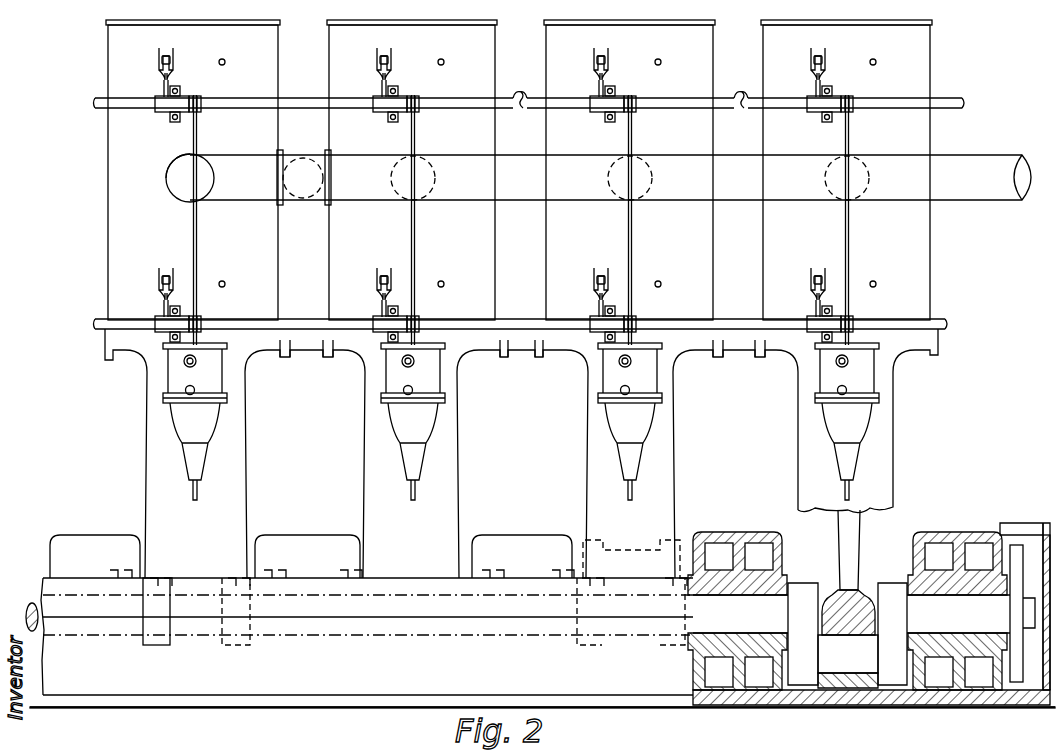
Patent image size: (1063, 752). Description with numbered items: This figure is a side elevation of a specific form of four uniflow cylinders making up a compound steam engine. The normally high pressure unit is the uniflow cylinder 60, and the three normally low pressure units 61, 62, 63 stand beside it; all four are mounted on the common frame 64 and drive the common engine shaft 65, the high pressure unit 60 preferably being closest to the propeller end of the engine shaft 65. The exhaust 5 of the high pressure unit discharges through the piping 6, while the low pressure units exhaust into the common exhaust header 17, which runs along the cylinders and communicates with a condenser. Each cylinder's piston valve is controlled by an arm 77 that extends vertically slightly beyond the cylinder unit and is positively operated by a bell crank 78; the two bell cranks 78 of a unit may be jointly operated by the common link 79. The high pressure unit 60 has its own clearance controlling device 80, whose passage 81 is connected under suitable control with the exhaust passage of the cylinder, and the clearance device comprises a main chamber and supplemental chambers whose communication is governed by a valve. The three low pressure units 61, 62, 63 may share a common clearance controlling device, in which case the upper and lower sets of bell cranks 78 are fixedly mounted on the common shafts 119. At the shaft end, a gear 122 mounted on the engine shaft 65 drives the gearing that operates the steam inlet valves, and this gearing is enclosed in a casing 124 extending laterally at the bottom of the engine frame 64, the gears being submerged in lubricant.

The exhaust 5 is at (178, 165).
The piping 6 is at (303, 178).
The common exhaust header 17 is at (598, 177).
The uniflow cylinder 60 is at (193, 170).
The normally low pressure unit 61 is at (412, 170).
The normally low pressure unit 62 is at (629, 170).
The normally low pressure unit 63 is at (846, 170).
The common frame 64 is at (307, 342).
The common engine shaft 65 is at (40, 615).
The arm 77 is at (157, 60).
The bell crank 78 is at (163, 84).
The common link 79 is at (194, 236).
The clearance controlling device 80 is at (521, 421).
The passage 81 is at (193, 390).
The common shaft 119 is at (518, 96).
The gear 122 is at (1013, 545).
The casing 124 is at (1046, 522).